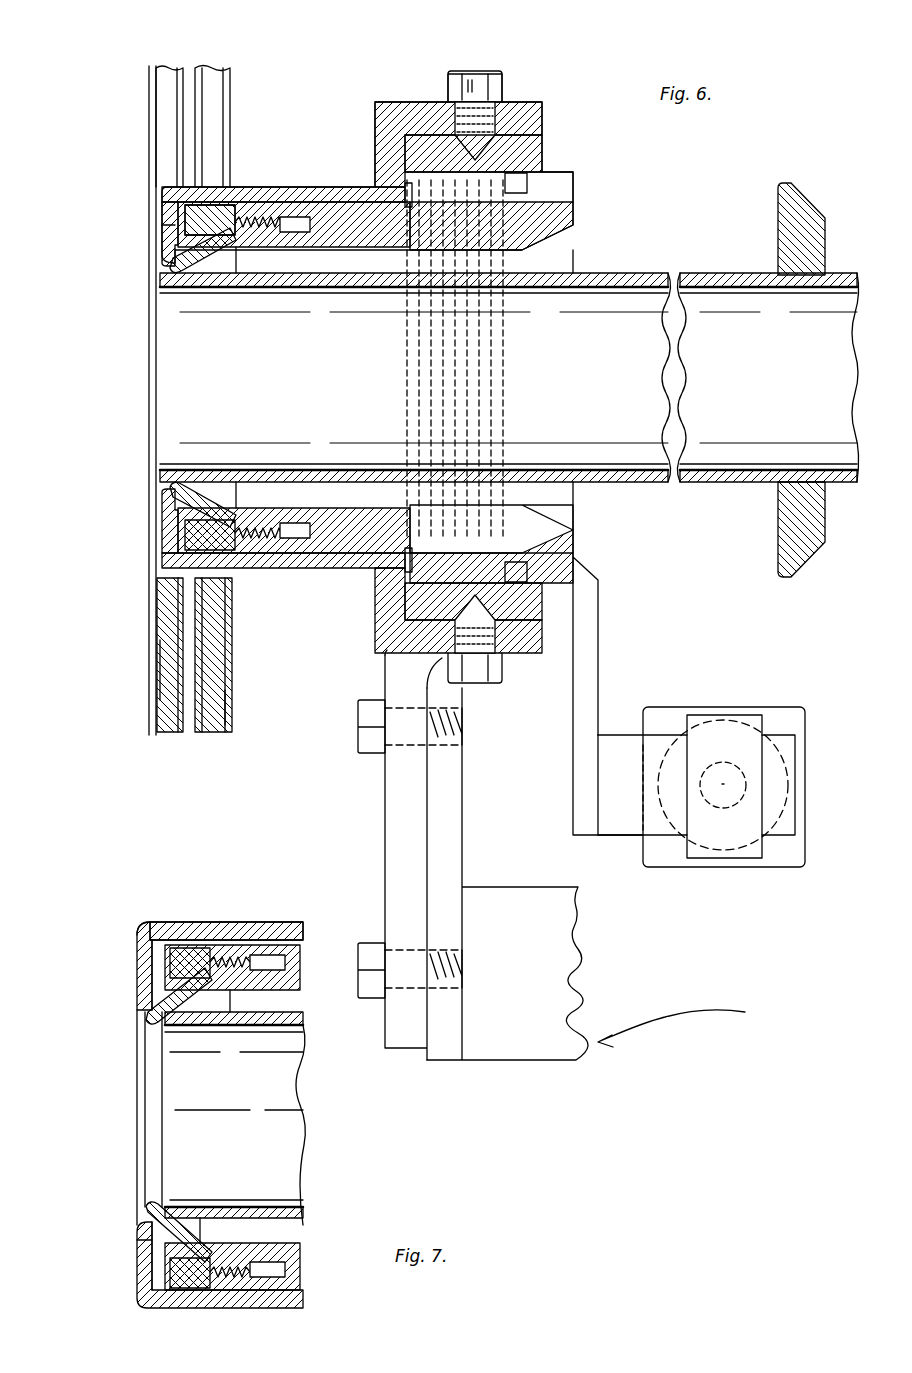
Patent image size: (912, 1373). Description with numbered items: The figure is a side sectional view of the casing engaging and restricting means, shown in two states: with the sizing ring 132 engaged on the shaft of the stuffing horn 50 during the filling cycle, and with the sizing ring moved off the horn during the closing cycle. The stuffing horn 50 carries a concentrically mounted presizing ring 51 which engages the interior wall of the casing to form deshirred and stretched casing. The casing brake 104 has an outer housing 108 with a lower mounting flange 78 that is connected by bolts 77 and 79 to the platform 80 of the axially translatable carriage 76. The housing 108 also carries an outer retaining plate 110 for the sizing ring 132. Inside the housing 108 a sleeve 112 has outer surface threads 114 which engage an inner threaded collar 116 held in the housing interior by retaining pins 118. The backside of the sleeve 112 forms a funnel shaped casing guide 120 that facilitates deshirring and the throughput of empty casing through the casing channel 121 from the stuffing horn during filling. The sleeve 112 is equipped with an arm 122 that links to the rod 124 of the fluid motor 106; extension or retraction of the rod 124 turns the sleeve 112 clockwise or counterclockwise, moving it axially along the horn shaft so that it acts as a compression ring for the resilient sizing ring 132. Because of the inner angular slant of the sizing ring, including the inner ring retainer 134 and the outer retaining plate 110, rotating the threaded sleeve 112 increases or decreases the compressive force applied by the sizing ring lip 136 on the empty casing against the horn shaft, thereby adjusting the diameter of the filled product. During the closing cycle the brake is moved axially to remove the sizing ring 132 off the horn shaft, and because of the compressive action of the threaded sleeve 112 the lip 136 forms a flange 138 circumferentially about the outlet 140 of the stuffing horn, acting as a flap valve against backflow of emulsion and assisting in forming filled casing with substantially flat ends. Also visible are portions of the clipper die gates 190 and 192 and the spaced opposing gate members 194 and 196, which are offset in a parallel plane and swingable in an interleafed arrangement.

In FIG. 6, the stuffing horn 50 is at (748, 273).
In FIG. 7, the stuffing horn 50 is at (290, 1208).
In FIG. 6, the presizing ring 51 is at (796, 576).
In FIG. 6, the carriage 76 is at (686, 1024).
In FIG. 6, the bolt 77 is at (370, 756).
In FIG. 6, the mounting flange 78 is at (403, 835).
In FIG. 6, the bolt 79 is at (372, 1005).
In FIG. 6, the slideable platform 80 is at (571, 950).
In FIG. 6, the casing brake 104 is at (283, 140).
In FIG. 6, the fluid motor 106 is at (780, 861).
In FIG. 6, the outer housing 108 is at (329, 187).
In FIG. 7, the outer housing 108 is at (232, 922).
In FIG. 6, the outer retaining plate 110 is at (168, 212).
In FIG. 7, the outer retaining plate 110 is at (147, 1250).
In FIG. 6, the sleeve 112 is at (570, 198).
In FIG. 7, the sleeve 112 is at (223, 992).
In FIG. 6, the outer surface threads 114 is at (452, 152).
In FIG. 6, the inner threaded collar 116 is at (550, 143).
In FIG. 6, the retaining pin 118 is at (515, 101).
In FIG. 6, the funnel shaped casing guide 120 is at (558, 511).
In FIG. 6, the casing channel 121 is at (333, 282).
In FIG. 7, the casing channel 121 is at (258, 1008).
In FIG. 6, the arm 122 is at (598, 610).
In FIG. 6, the rod 124 is at (722, 772).
In FIG. 6, the sizing ring 132 is at (225, 282).
In FIG. 7, the sizing ring 132 is at (171, 1255).
In FIG. 6, the inner ring retainer 134 is at (235, 190).
In FIG. 7, the inner ring retainer 134 is at (185, 1275).
In FIG. 6, the sizing ring lip 136 is at (160, 315).
In FIG. 7, the sizing ring lip 136 is at (145, 1196).
In FIG. 7, the flange 138 is at (150, 1051).
In FIG. 6, the outlet 140 is at (155, 418).
In FIG. 7, the outlet 140 is at (160, 1134).
In FIG. 6, the die gate 190 is at (170, 604).
In FIG. 6, the die gate 192 is at (218, 641).
In FIG. 6, the gate member 194 is at (160, 670).
In FIG. 6, the gate member 196 is at (224, 706).